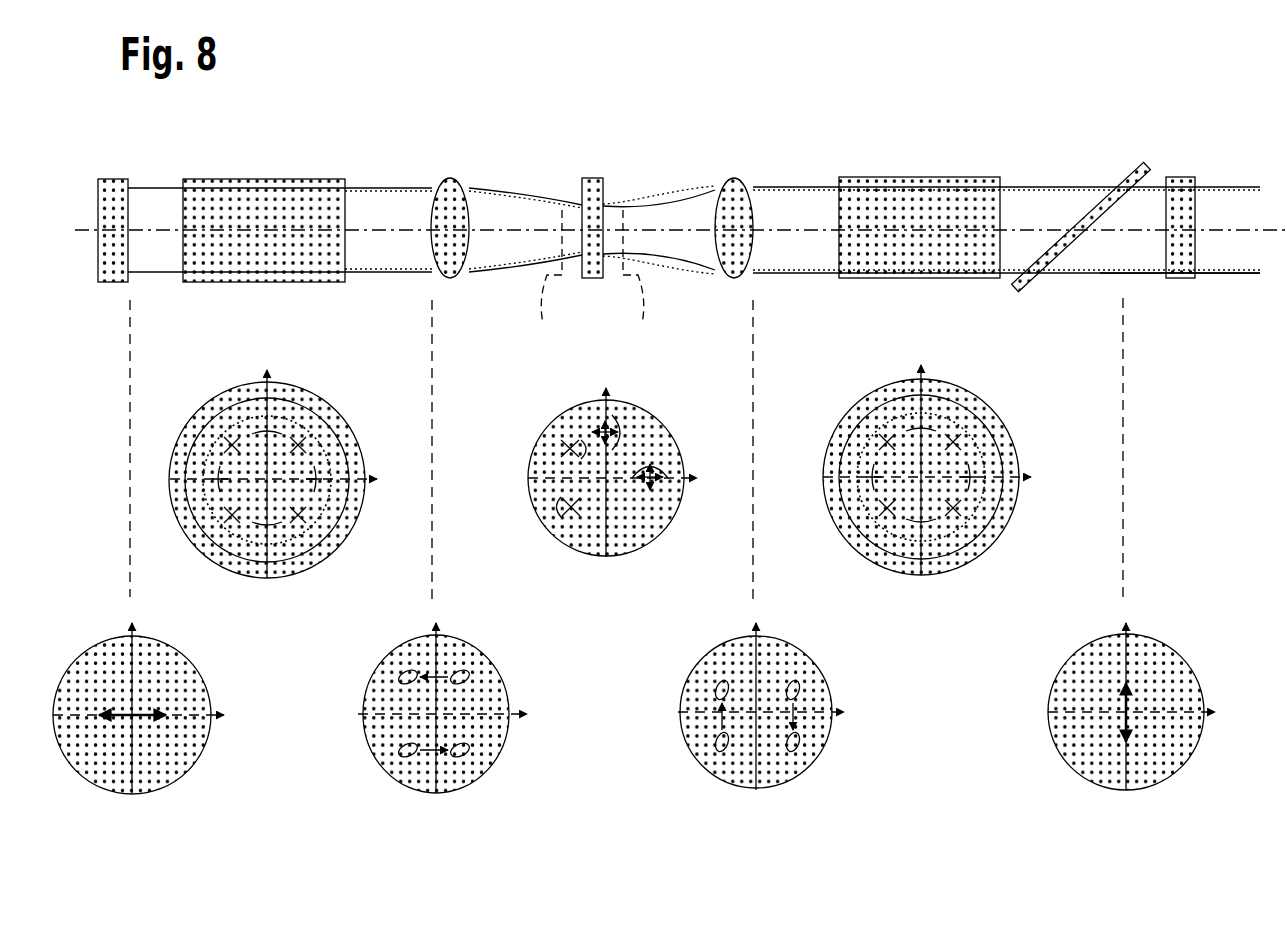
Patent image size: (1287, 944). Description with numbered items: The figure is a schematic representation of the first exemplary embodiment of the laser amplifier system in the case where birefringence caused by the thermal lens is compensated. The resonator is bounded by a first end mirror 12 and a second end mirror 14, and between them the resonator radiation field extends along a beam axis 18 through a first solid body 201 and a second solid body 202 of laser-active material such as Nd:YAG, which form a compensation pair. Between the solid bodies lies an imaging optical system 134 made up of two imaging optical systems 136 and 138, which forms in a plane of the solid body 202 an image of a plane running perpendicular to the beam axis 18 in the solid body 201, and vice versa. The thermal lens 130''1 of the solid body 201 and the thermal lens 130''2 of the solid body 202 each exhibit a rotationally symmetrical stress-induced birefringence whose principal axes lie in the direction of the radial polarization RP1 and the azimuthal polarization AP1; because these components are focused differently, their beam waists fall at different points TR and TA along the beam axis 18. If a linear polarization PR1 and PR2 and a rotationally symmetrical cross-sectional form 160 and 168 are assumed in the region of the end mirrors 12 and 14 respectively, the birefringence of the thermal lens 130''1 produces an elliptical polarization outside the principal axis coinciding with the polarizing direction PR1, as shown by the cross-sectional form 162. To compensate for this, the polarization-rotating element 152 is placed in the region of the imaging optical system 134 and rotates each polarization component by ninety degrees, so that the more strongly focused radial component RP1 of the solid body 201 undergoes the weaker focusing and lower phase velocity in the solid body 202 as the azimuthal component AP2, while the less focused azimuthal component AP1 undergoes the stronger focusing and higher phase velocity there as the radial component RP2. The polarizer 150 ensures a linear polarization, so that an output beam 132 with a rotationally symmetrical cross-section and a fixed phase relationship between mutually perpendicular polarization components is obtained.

The first end mirror 12 is at (114, 190).
The second end mirror 14 is at (1180, 190).
The beam axis 18 is at (160, 227).
The first solid body 201 is at (293, 180).
The second solid body 202 is at (948, 178).
The output beam 132 is at (1233, 255).
The imaging optical system 134 is at (510, 180).
The first imaging optical system 136 is at (450, 195).
The second imaging optical system 138 is at (735, 195).
The polarizer 150 is at (1127, 175).
The polarization-rotating element 152 is at (592, 195).
The beam waist point of the radial polarization component TR is at (544, 285).
The beam waist point of the azimuthal polarization component TA is at (641, 285).
The thermal lens of the first solid body 130''1 is at (273, 515).
The thermal lens of the second solid body 130''2 is at (963, 514).
The azimuthal polarization in the first solid body AP1 is at (236, 451).
The radial polarization in the first solid body RP1 is at (299, 448).
The azimuthal polarization component in the second solid body AP2 is at (967, 482).
The radial polarization component in the second solid body RP2 is at (957, 432).
The cross-sectional form at the first end mirror 160 is at (138, 749).
The cross-sectional form after the first thermal lens 162 is at (452, 775).
The cross-sectional form at the second end mirror 168 is at (1131, 747).
The linear polarization at the first end mirror PR1 is at (132, 720).
The linear polarization at the second end mirror PR2 is at (1123, 710).